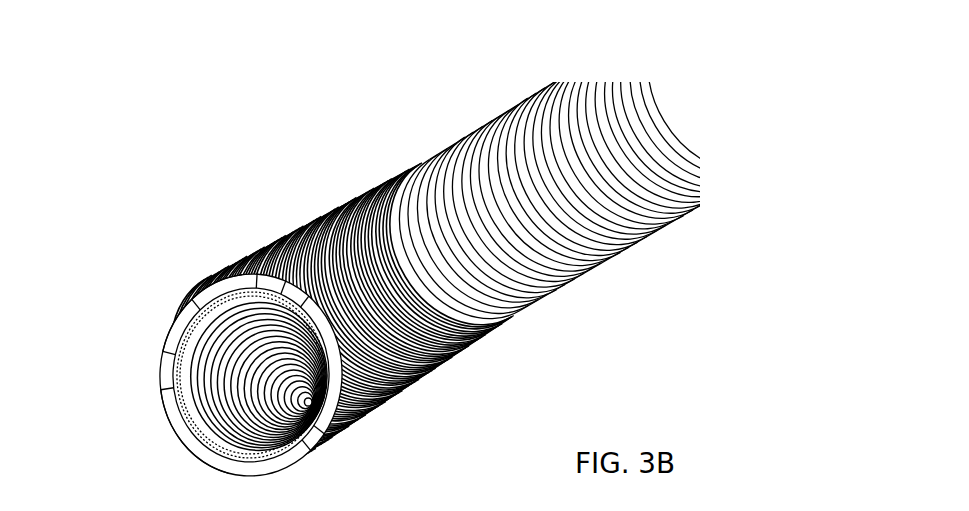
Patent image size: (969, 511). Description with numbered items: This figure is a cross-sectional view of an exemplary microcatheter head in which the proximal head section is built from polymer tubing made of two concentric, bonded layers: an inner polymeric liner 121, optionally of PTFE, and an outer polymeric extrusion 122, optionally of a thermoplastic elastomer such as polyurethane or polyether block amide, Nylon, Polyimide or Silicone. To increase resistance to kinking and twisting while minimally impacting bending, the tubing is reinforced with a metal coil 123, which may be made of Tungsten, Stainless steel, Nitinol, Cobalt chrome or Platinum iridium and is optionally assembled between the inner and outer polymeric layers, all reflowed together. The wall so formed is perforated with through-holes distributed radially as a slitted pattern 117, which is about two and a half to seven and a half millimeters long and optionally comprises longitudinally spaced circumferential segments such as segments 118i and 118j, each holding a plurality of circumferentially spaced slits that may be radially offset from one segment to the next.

The slitted pattern 117 is at (200, 132).
The circumferential segment 118i is at (172, 290).
The circumferential segment 118j is at (174, 455).
The inner polymeric liner 121 is at (212, 312).
The outer polymeric extrusion 122 is at (175, 338).
The metal coil 123 is at (517, 130).